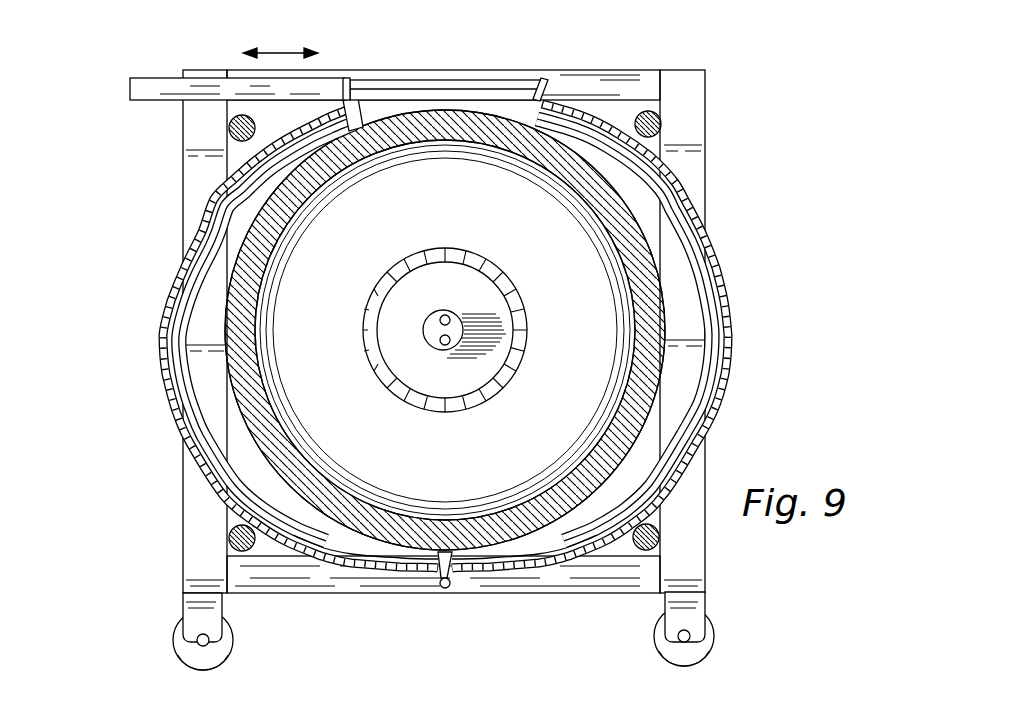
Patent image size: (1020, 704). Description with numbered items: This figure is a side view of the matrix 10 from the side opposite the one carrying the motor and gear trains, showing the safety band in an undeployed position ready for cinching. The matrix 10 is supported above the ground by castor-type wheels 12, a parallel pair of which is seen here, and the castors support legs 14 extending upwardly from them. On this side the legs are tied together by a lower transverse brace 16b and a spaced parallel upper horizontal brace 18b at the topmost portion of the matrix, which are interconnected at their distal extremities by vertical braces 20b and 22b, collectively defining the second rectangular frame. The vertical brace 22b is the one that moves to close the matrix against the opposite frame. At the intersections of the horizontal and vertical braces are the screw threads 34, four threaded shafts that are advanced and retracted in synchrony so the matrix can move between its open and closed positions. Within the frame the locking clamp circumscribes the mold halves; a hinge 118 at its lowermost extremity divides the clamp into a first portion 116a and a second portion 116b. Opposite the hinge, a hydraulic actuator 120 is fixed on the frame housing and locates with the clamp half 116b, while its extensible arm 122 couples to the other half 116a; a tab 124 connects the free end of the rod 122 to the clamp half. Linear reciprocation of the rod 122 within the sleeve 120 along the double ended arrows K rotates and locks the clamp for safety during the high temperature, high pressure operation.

The matrix 10 is at (465, 339).
The castor-type wheels 12 is at (446, 620).
The legs 14 is at (193, 606).
The lower transverse brace 16b is at (290, 582).
The upper horizontal brace 18b is at (600, 69).
The vertical brace 20b is at (198, 181).
The vertical brace 22b is at (690, 145).
The screw threads 34 is at (655, 122).
The first portion of locking clamp 116a is at (726, 276).
The second portion of locking clamp 116b is at (160, 306).
The hinge 118 is at (450, 586).
The hydraulic actuator 120 is at (173, 84).
The extensible arm 122 is at (410, 87).
The tab 124 is at (546, 86).
The double ended arrows K is at (282, 52).